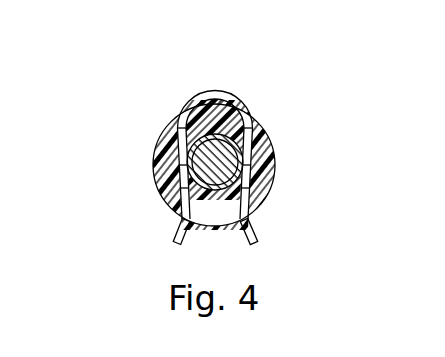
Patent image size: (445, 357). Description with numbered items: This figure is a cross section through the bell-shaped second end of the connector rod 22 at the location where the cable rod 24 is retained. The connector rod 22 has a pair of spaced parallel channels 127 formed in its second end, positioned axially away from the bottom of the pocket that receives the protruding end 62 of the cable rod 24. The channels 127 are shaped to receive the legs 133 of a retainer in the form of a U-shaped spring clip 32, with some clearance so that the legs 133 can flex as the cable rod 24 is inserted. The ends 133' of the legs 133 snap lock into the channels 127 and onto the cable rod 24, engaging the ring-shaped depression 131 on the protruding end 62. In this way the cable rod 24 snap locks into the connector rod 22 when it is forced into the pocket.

The connector rod 22 is at (260, 221).
The cable rod 24 is at (255, 124).
The U-shaped spring clip 32 is at (196, 86).
The protruding end 62 is at (273, 170).
The channels 127 is at (177, 193).
The ring-shaped depression 131 is at (172, 130).
The legs 133 is at (196, 137).
The ends of legs 133' is at (220, 255).